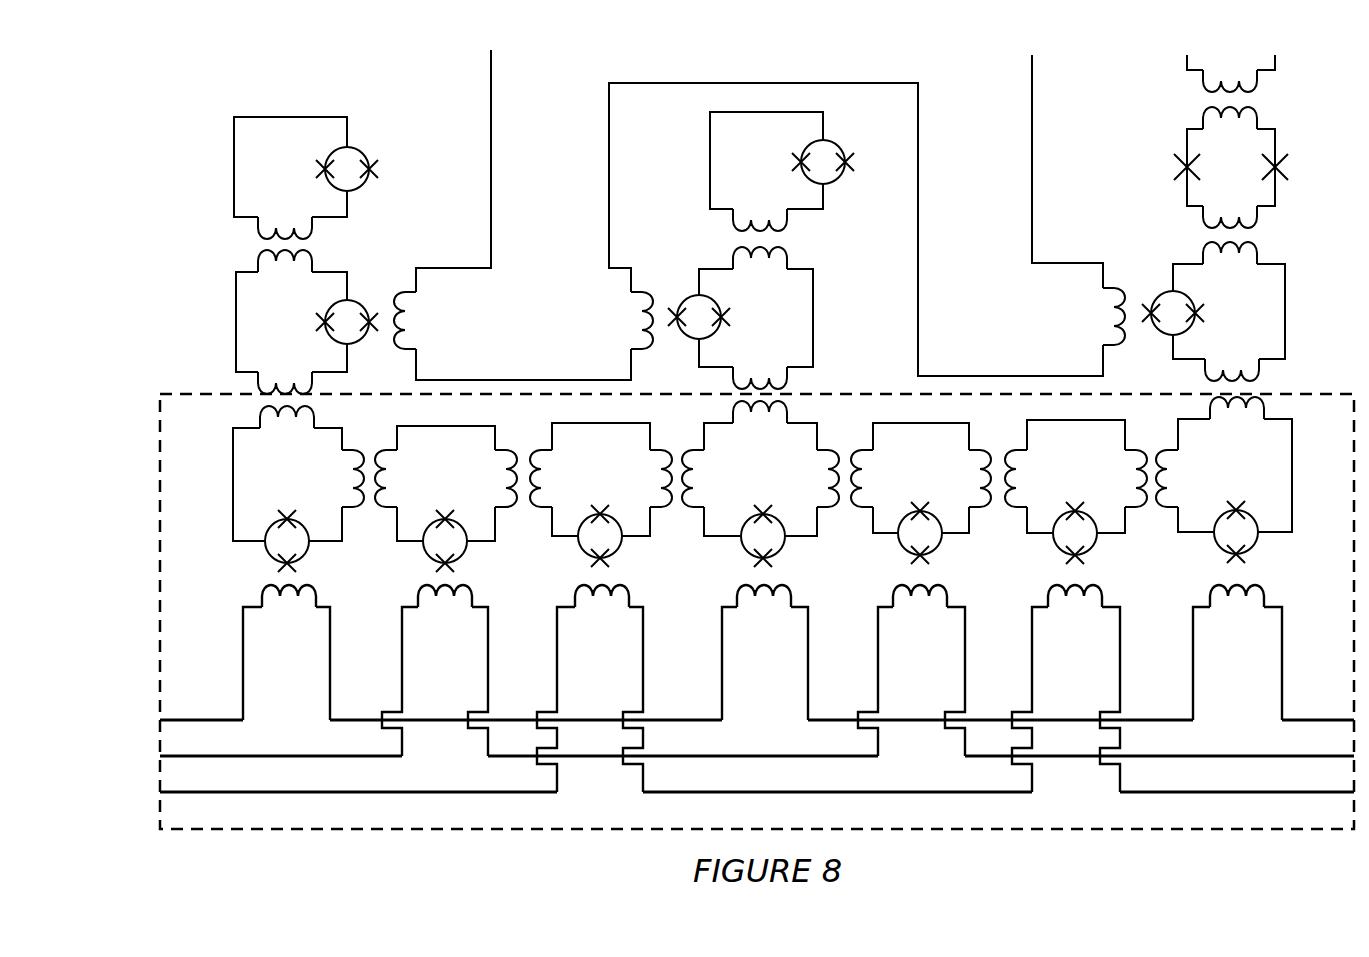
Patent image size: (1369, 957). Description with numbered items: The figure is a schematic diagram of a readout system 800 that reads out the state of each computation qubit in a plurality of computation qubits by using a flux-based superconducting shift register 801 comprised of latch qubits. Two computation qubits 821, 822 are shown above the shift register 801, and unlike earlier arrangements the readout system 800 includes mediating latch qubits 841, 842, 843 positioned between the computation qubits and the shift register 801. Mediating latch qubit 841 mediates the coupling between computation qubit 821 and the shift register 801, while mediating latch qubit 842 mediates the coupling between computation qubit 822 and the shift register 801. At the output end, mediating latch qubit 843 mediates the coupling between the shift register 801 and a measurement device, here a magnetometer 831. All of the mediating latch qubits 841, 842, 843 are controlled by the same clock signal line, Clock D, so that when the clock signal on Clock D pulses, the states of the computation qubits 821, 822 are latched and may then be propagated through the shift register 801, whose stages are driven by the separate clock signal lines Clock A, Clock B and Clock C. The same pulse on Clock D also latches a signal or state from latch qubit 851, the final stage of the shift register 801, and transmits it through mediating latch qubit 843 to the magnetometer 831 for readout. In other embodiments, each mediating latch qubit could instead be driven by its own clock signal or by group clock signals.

The readout system 800 is at (209, 125).
The flux-based superconducting shift register 801 is at (272, 830).
The computation qubit 821 is at (313, 117).
The computation qubit 822 is at (707, 127).
The magnetometer 831 is at (1182, 140).
The mediating latch qubit 841 is at (233, 302).
The mediating latch qubit 842 is at (812, 293).
The mediating latch qubit 843 is at (1170, 274).
The latch qubit 851 is at (1293, 480).